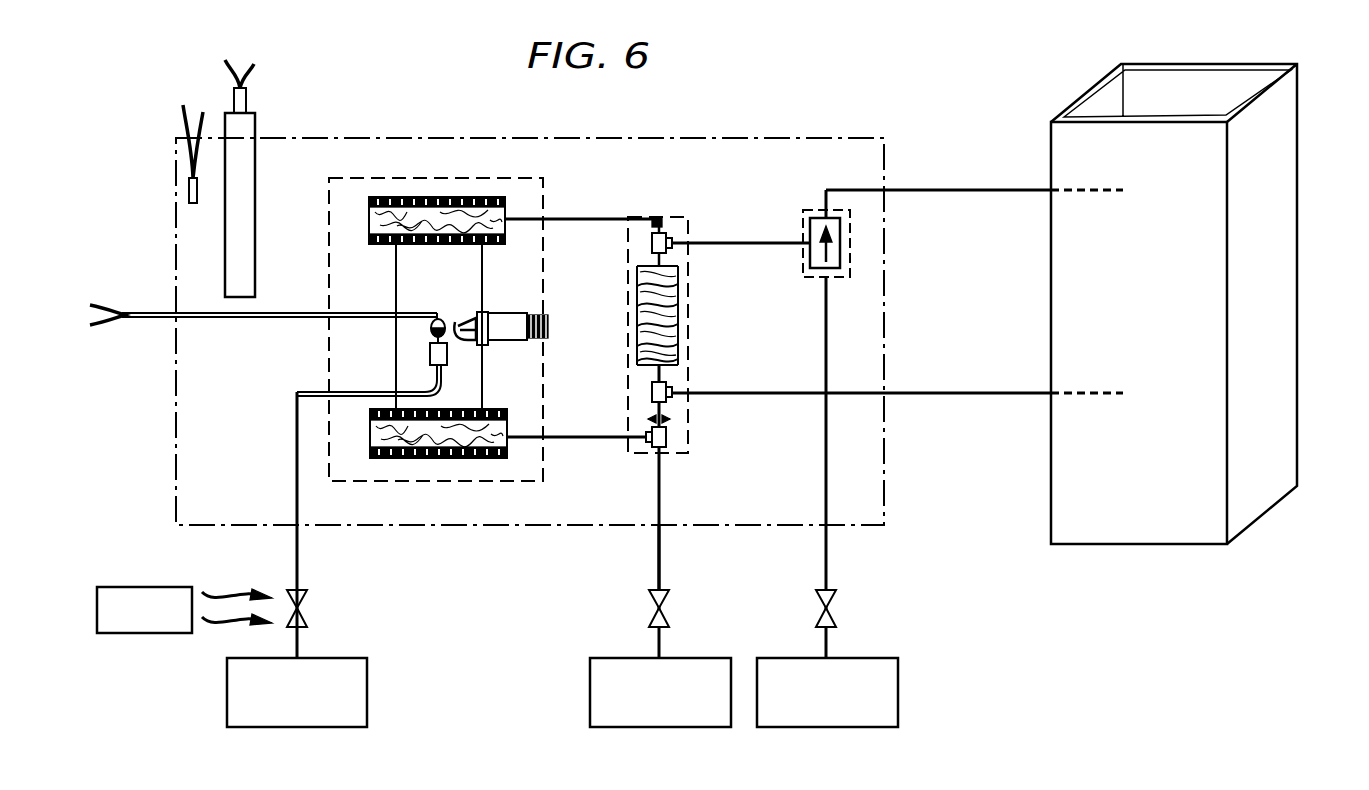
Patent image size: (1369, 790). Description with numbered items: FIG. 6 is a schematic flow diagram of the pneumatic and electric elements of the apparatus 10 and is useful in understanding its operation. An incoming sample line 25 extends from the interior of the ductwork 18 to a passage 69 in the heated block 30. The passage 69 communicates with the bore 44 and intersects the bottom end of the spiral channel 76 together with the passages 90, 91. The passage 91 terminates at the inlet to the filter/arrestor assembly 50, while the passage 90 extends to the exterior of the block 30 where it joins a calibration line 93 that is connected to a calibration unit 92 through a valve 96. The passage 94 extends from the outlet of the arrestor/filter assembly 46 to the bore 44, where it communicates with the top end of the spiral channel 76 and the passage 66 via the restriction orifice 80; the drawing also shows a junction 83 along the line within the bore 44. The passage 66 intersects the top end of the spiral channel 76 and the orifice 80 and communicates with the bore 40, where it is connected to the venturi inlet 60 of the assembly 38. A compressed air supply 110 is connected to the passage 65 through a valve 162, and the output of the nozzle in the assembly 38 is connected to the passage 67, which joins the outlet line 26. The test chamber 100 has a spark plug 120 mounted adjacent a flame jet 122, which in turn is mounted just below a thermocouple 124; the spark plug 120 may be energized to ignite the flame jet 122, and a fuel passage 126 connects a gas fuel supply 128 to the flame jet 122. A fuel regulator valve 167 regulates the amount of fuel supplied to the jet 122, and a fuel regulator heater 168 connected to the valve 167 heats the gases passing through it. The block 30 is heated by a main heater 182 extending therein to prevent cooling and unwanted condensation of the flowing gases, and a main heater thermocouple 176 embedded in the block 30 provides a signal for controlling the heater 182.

The combustion test apparatus 10 is at (364, 98).
The ductwork 18 is at (1277, 254).
The incoming sample line 25 is at (960, 393).
The outlet line 26 is at (920, 190).
The block 30 is at (672, 137).
The assembly 38 is at (841, 243).
The bore 40 is at (851, 266).
The bore 44 is at (690, 345).
The arrestor/filter assembly 46 is at (403, 197).
The filter/arrestor assembly 50 is at (432, 458).
The venturi inlet 60 is at (698, 216).
The passage 65 is at (826, 442).
The passage 66 is at (768, 247).
The passage 67 is at (838, 190).
The passage 69 is at (826, 362).
The spiral channel 76 is at (678, 310).
The restriction orifice 80 is at (664, 222).
The junction 83 is at (670, 419).
The passage 90 is at (660, 485).
The passage 91 is at (612, 440).
The calibration unit 92 is at (705, 658).
The calibration line 93 is at (658, 550).
The passage 94 is at (600, 218).
The valve 96 is at (664, 600).
The test chamber 100 is at (420, 260).
The compressed air supply 110 is at (890, 658).
The spark plug 120 is at (512, 312).
The flame jet 122 is at (430, 350).
The thermocouple 124 is at (168, 313).
The fuel passage 126 is at (297, 447).
The gas fuel supply 128 is at (335, 658).
The valve 162 is at (833, 600).
The fuel regulator valve 167 is at (305, 600).
The fuel regulator heater 168 is at (136, 587).
The main heater thermocouple 176 is at (189, 195).
The main heater 182 is at (255, 185).